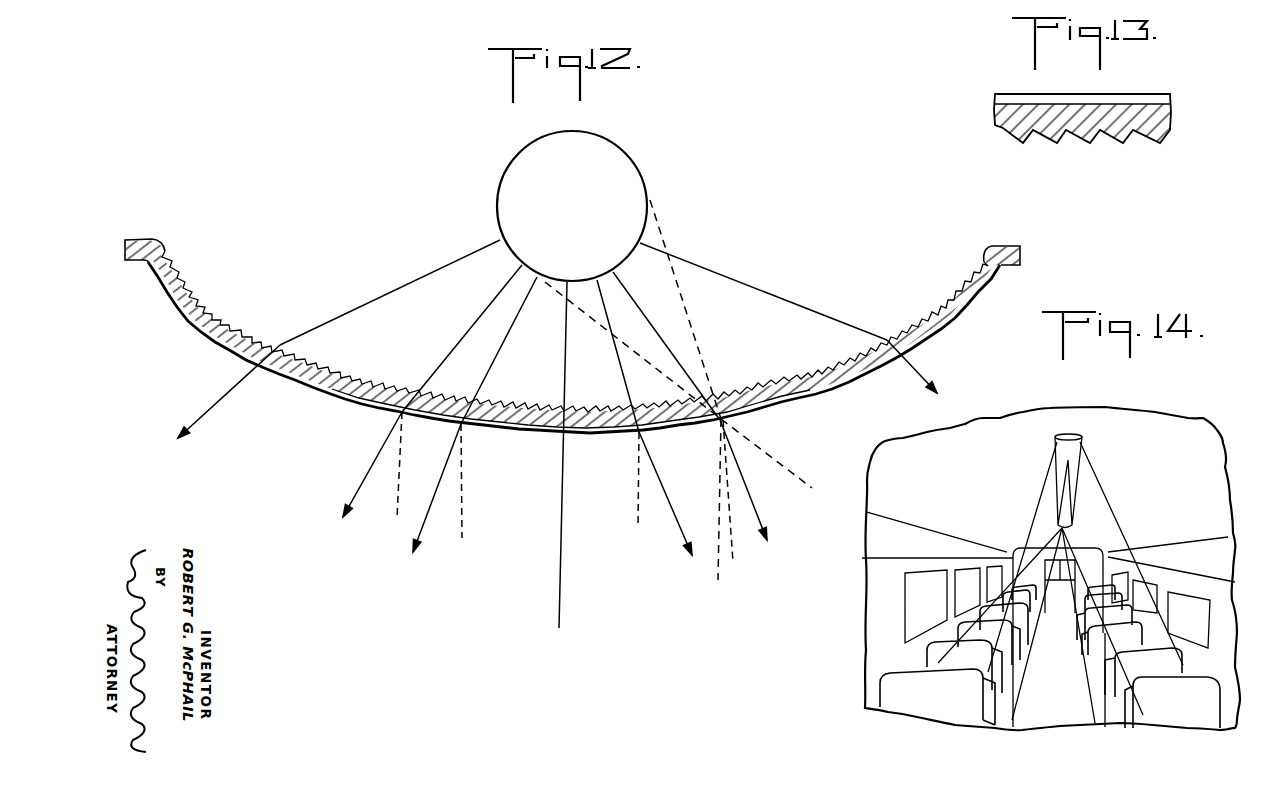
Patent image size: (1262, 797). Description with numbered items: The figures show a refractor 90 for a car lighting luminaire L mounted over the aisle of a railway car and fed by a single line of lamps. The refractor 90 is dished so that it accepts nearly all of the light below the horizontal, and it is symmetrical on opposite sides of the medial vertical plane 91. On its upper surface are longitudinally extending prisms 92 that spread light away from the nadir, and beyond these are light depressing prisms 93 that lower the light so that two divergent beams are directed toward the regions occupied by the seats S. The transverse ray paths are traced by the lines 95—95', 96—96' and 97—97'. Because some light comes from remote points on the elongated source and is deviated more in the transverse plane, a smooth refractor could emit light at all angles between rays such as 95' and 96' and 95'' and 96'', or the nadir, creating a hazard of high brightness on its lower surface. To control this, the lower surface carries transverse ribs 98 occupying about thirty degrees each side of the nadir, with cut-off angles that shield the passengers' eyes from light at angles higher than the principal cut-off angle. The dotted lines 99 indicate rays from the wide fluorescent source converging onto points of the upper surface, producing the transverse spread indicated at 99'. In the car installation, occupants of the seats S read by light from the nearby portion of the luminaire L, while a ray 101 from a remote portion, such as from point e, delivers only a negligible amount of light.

In FIG. 12, the refractor 90 is at (972, 309).
In FIG. 13, the refractor 90 is at (1143, 105).
In FIG. 12, the medial vertical plane 91 is at (557, 584).
In FIG. 12, the longitudinally extending prisms 92 is at (517, 398).
In FIG. 13, the longitudinally extending prisms 92 is at (1053, 98).
In FIG. 12, the light depressing prisms 93 is at (230, 322).
In FIG. 12, the ray 95 is at (550, 354).
In FIG. 12, the ray 95' is at (555, 489).
In FIG. 12, the ray 95'' is at (559, 494).
In FIG. 12, the ray 96 is at (561, 342).
In FIG. 12, the ray 96' is at (565, 476).
In FIG. 12, the ray 96'' is at (575, 503).
In FIG. 12, the ray 97 is at (583, 292).
In FIG. 12, the ray 97' is at (571, 389).
In FIG. 12, the transverse ribs 98 is at (617, 432).
In FIG. 13, the transverse ribs 98 is at (1080, 143).
In FIG. 12, the dotted lines 99 is at (641, 309).
In FIG. 12, the spread rays 99' is at (760, 510).
In FIG. 14, the car lighting luminaire L is at (1065, 437).
In FIG. 14, the ray 101 is at (1100, 629).
In FIG. 14, the seats S is at (960, 697).
In FIG. 14, the illuminated spot e is at (1150, 704).